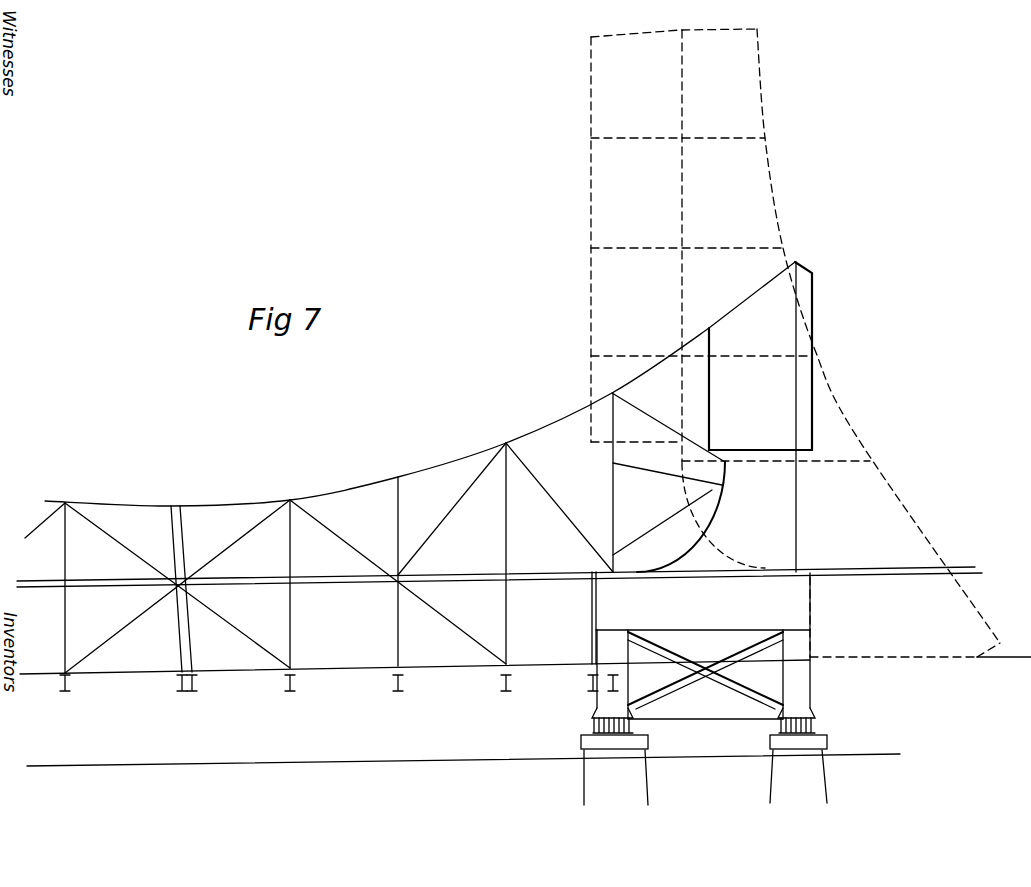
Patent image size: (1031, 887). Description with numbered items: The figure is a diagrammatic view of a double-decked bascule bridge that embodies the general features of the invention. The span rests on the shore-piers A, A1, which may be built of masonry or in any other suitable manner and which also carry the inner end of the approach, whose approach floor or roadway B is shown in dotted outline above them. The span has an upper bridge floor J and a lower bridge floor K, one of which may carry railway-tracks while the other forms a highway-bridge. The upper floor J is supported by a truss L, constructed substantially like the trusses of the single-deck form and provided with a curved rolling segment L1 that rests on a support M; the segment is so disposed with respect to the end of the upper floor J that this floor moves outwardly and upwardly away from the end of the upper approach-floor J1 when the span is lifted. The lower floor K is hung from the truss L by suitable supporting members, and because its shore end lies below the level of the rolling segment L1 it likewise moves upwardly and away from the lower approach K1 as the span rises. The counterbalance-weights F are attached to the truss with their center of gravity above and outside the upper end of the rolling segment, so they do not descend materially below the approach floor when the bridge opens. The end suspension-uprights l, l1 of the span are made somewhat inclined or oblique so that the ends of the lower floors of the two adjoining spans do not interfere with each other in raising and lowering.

The shore-pier A is at (798, 755).
The shore-pier A1 is at (614, 756).
The approach floor or roadway B is at (795, 336).
The counterbalance-weights F is at (780, 423).
The upper bridge floor J is at (452, 574).
The upper approach-floor J1 is at (765, 568).
The lower bridge floor K is at (343, 669).
The lower approach K1 is at (855, 658).
The truss L is at (398, 513).
The rolling segment L1 is at (718, 517).
The support M is at (703, 646).
The end suspension-upright l is at (185, 638).
The end suspension-upright l1 is at (177, 636).